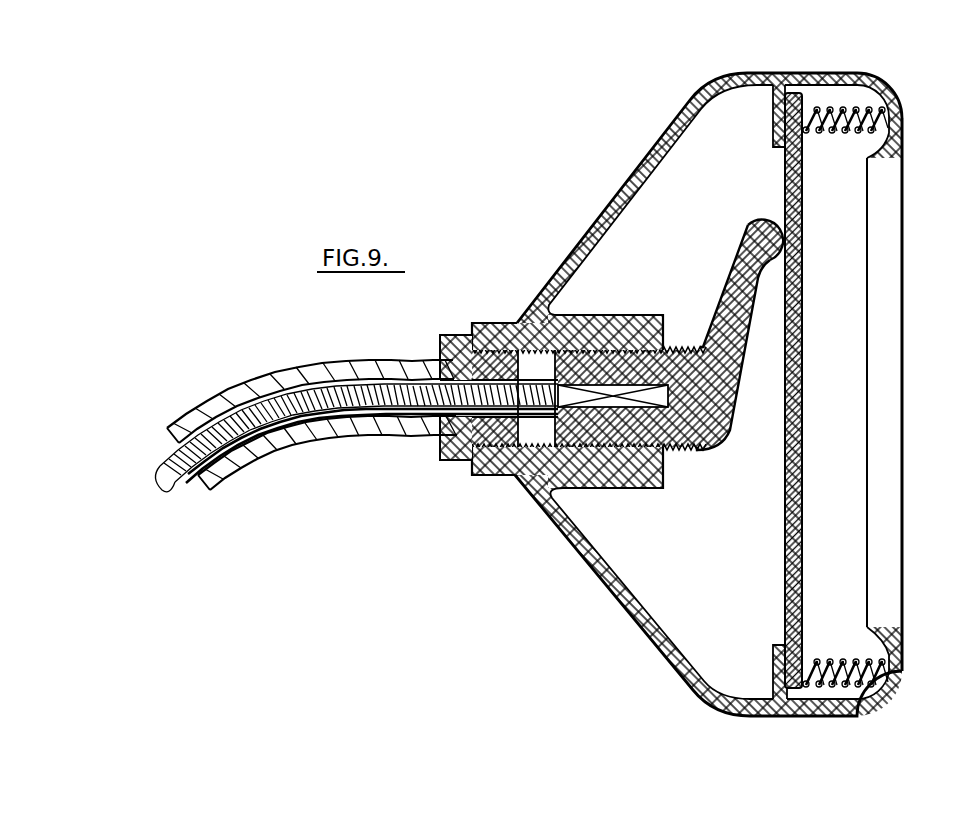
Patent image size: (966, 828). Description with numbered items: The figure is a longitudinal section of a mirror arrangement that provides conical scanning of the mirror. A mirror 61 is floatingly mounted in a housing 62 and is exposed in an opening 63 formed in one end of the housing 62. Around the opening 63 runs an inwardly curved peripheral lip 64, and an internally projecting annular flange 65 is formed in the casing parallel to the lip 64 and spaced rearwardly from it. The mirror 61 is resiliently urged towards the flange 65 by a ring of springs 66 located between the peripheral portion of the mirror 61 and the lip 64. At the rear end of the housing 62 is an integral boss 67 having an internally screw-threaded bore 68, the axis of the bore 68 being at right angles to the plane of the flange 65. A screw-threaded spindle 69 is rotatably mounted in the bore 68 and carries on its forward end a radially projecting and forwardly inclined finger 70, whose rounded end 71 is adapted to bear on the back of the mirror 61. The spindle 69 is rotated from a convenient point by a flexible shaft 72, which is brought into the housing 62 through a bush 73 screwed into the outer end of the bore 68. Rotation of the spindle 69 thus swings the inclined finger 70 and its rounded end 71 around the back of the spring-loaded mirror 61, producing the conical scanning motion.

The mirror 61 is at (801, 352).
The housing 62 is at (600, 218).
The opening 63 is at (850, 387).
The inwardly curved peripheral lip 64 is at (885, 183).
The internally projecting annular flange 65 is at (777, 107).
The ring of springs 66 is at (843, 103).
The boss 67 is at (601, 337).
The internally screw-threaded bore 68 is at (537, 433).
The screw-threaded spindle 69 is at (630, 437).
The finger 70 is at (740, 297).
The rounded end 71 is at (783, 247).
The flexible shaft 72 is at (340, 403).
The bush 73 is at (447, 347).